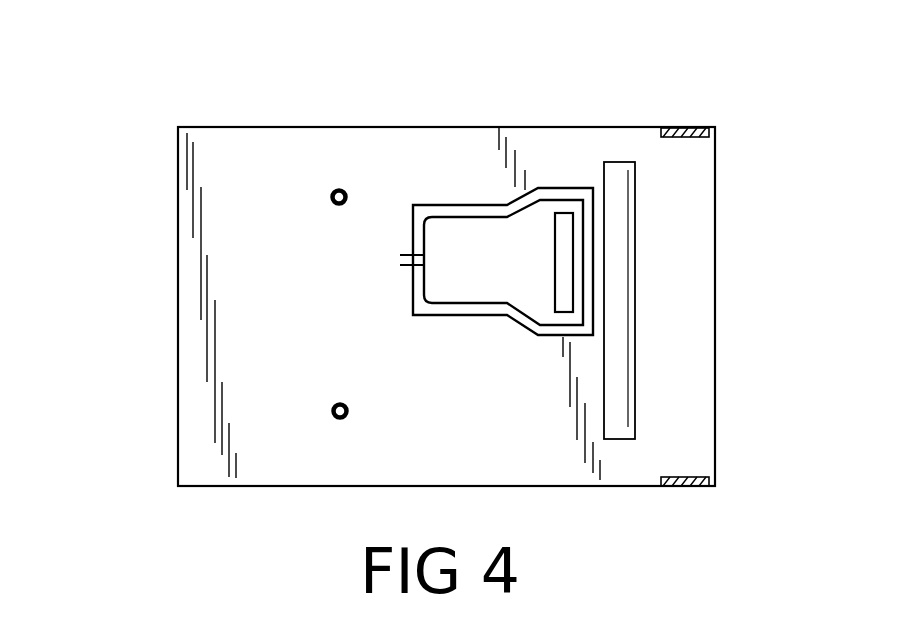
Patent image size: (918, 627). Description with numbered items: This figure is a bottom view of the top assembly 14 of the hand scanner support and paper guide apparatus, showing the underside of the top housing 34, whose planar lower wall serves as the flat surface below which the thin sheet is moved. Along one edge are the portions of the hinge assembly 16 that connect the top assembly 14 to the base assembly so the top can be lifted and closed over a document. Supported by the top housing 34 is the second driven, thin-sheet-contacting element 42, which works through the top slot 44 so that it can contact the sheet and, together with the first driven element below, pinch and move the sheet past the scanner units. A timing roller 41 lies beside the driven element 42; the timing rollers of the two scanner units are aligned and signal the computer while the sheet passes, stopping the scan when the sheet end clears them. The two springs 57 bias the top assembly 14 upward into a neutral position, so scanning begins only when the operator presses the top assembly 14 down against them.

The top assembly 14 is at (560, 488).
The hinge assembly 16 is at (694, 102).
The top housing 34 is at (230, 246).
The timing roller 41 is at (565, 292).
The second driven, thin-sheet-contacting element 42 is at (620, 225).
The top slot 44 is at (637, 302).
The springs 57 is at (340, 188).